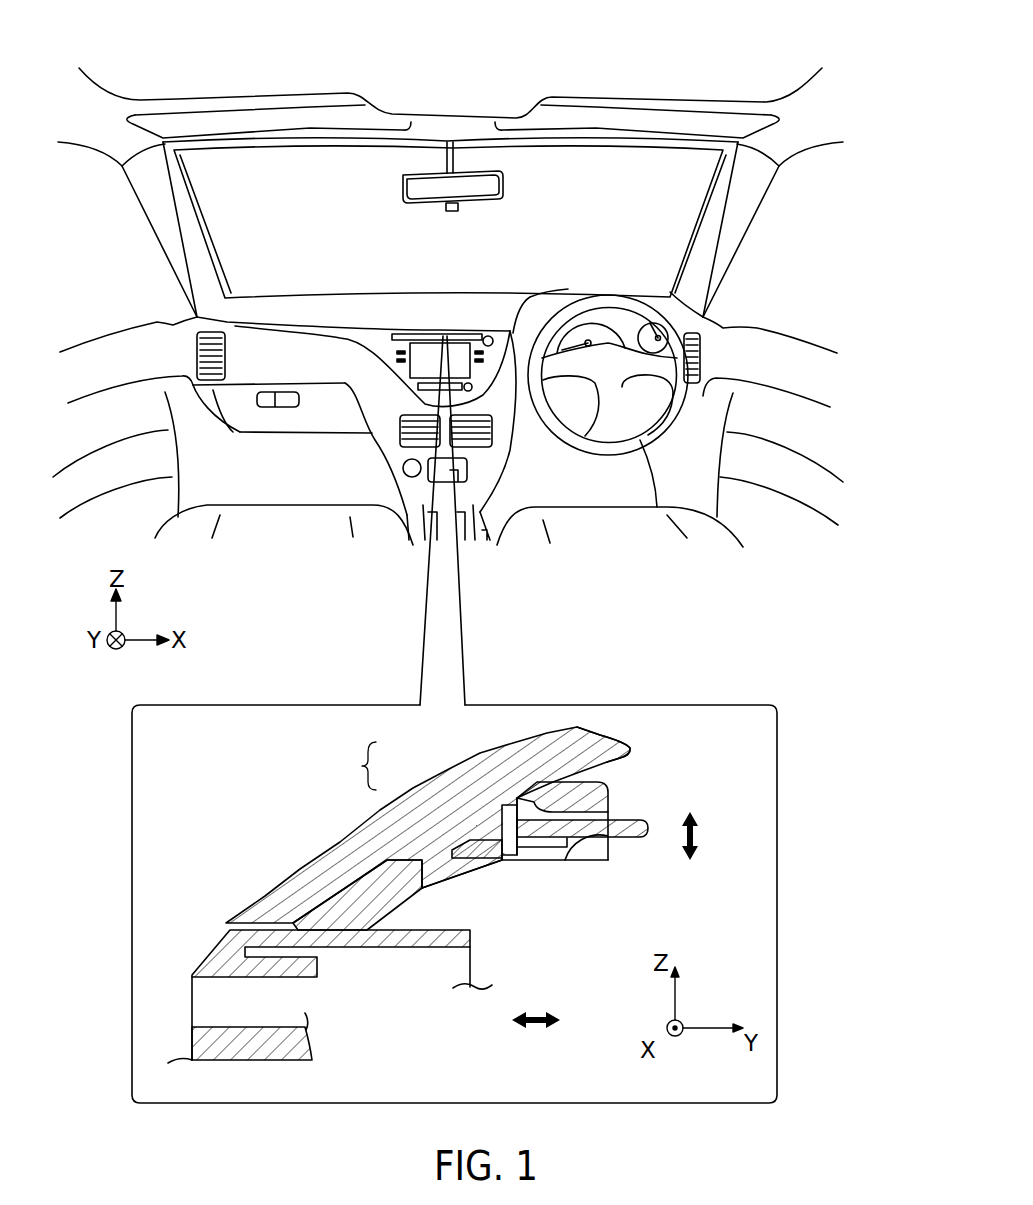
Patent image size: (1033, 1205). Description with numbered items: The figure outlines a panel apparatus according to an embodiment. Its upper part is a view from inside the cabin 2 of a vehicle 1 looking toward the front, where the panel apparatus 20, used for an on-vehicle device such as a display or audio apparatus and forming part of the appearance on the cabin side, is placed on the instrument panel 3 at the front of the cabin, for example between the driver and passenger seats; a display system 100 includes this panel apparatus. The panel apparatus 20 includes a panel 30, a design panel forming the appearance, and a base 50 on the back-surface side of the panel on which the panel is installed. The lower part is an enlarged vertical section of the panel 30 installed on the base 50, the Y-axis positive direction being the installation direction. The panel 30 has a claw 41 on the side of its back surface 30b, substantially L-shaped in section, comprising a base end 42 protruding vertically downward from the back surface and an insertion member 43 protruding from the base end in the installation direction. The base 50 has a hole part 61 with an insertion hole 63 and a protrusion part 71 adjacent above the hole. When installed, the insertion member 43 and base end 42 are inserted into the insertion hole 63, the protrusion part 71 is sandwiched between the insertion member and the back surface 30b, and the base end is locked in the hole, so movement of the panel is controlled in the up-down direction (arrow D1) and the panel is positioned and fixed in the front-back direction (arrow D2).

The vehicle 1 is at (727, 58).
The cabin 2 is at (537, 189).
The instrument panel 3 is at (352, 300).
The panel 30 is at (383, 339).
The back surface 30b is at (613, 760).
The display system 100 is at (443, 322).
The panel apparatus 20 is at (490, 331).
The claw 41 is at (355, 766).
The base end 42 is at (503, 800).
The insertion member 43 is at (483, 783).
The protrusion part 71 is at (608, 798).
The hole part 61 is at (556, 861).
The insertion hole 63 is at (580, 855).
The base 50 is at (543, 952).
The arrow D1 is at (703, 834).
The arrow D2 is at (537, 1040).